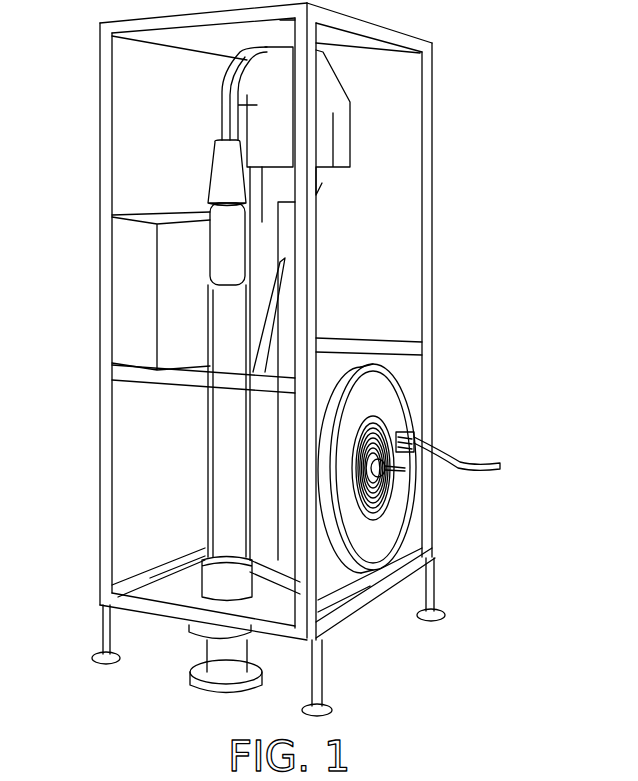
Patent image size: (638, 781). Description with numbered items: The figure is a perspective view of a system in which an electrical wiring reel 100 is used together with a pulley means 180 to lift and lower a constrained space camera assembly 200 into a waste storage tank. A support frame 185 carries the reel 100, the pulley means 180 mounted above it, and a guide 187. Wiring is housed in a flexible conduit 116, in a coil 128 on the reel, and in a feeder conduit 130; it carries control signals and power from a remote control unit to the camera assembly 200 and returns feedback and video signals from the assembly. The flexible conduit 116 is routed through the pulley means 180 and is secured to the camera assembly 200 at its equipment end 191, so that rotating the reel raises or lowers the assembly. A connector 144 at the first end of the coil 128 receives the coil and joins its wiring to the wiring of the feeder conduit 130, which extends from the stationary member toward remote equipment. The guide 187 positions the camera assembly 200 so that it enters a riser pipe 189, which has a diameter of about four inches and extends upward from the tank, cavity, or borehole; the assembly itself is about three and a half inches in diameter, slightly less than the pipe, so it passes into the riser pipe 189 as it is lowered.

The electrical wiring reel 100 is at (280, 363).
The flexible conduit 116 is at (280, 333).
The coil 128 is at (385, 527).
The feeder conduit 130 is at (467, 463).
The connector 144 is at (433, 480).
The pulley means 180 is at (217, 113).
The frame 185 is at (367, 30).
The guide 187 is at (212, 572).
The riser pipe 189 is at (227, 650).
The equipment end 191 is at (227, 128).
The camera assembly 200 is at (217, 328).